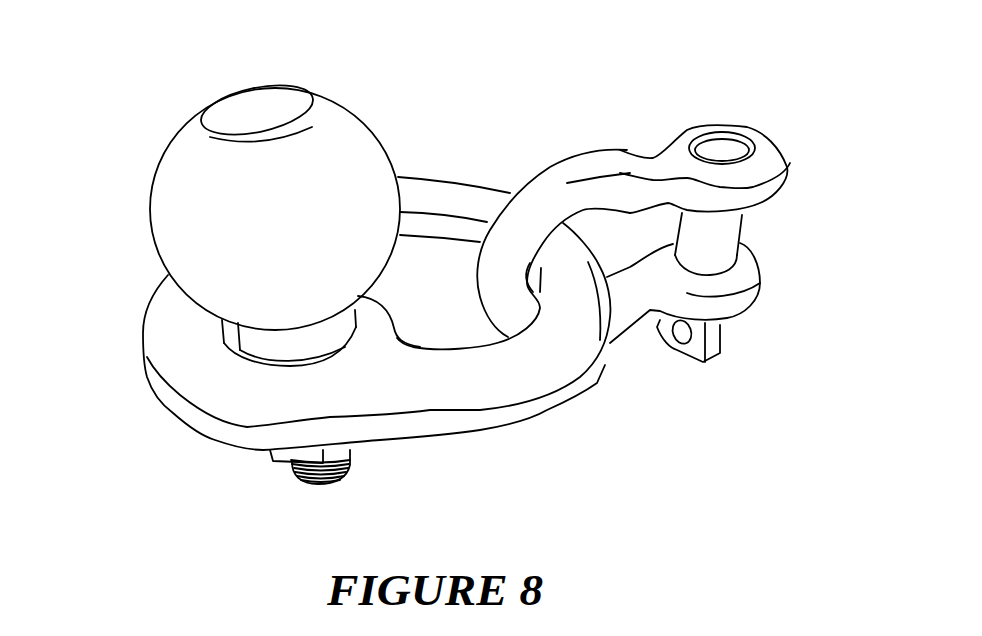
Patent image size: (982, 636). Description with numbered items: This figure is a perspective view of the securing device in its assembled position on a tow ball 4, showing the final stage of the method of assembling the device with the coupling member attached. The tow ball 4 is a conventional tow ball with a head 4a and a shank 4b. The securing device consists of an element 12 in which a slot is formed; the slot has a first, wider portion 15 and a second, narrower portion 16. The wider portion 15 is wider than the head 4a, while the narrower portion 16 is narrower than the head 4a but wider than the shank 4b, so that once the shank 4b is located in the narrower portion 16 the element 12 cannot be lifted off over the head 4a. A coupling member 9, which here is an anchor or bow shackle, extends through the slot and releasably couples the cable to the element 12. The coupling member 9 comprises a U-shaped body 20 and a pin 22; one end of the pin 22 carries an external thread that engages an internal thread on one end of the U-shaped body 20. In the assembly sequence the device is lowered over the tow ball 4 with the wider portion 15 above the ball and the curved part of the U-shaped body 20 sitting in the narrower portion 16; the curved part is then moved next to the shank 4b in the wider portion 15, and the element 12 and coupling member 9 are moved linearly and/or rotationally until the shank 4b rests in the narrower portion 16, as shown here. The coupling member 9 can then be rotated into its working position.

The tow ball 4 is at (222, 216).
The head 4a is at (162, 214).
The shank 4b is at (263, 338).
The coupling member 9 is at (619, 201).
The element 12 is at (470, 390).
The first portion 15 is at (456, 245).
The second portion 16 is at (325, 337).
The U-shaped body 20 is at (678, 148).
The pin 22 is at (722, 235).